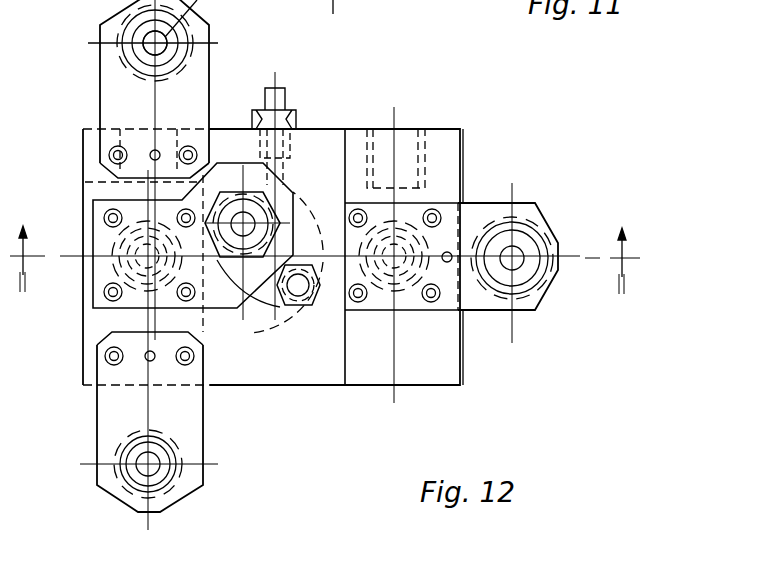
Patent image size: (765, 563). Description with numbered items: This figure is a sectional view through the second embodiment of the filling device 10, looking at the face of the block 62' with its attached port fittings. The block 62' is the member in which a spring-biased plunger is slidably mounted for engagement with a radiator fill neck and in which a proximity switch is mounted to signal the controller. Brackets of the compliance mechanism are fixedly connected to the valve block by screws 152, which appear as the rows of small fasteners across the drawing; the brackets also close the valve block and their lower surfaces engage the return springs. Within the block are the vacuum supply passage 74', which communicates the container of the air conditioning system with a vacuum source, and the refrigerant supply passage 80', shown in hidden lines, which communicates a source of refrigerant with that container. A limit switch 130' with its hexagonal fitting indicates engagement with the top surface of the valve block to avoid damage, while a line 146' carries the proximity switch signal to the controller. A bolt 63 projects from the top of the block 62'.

The device 10 is at (325, 248).
The block 62' is at (273, 239).
The bolt 63 is at (283, 105).
The vacuum supply passage 74' is at (165, 247).
The refrigerant supply passage 80' is at (405, 141).
The limit switch 130' is at (266, 253).
The line 146' is at (298, 306).
The screw 152 is at (109, 155).